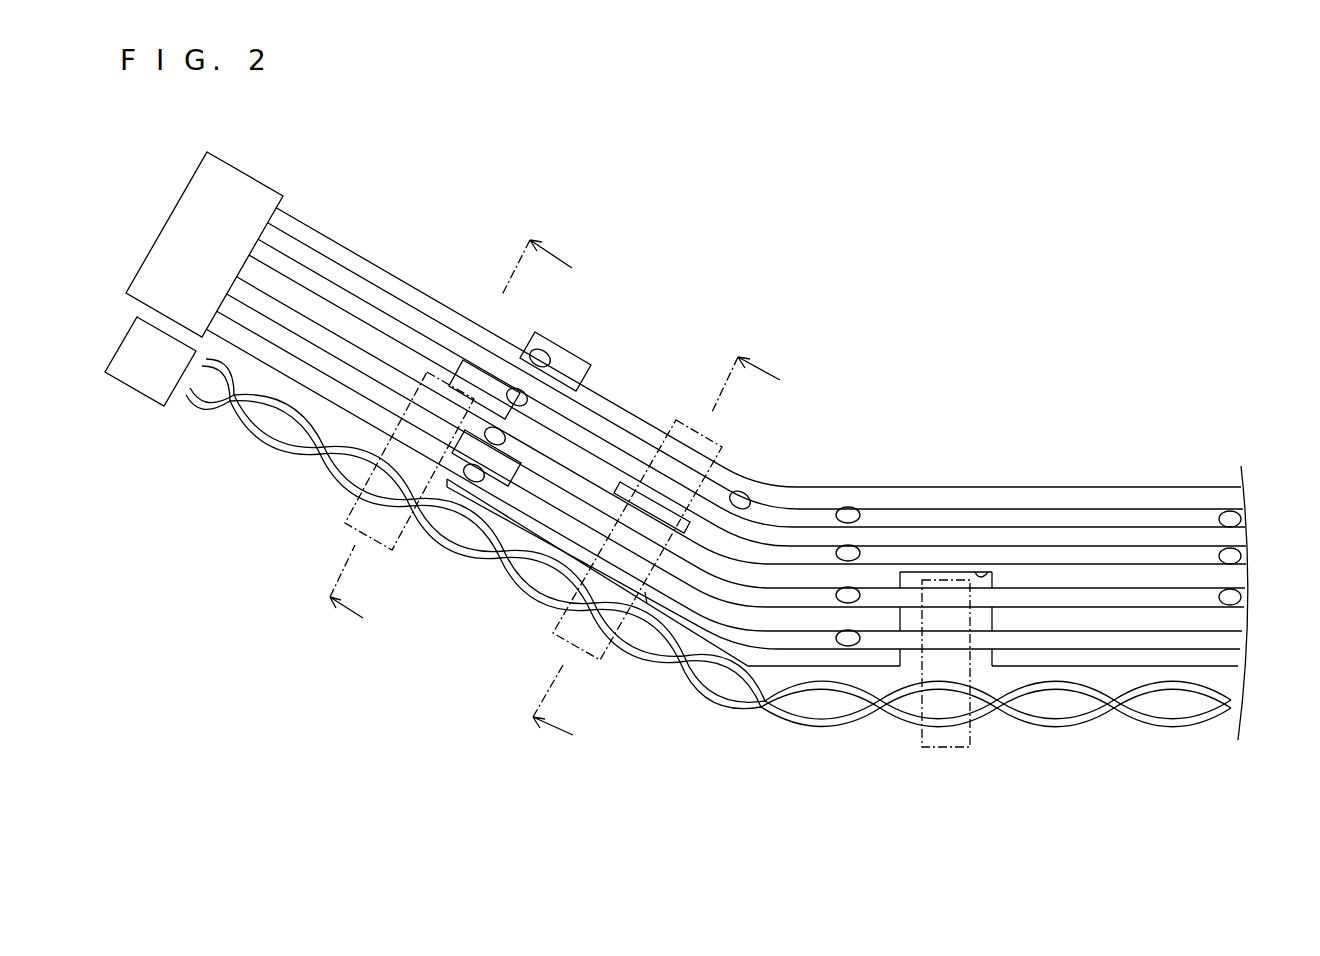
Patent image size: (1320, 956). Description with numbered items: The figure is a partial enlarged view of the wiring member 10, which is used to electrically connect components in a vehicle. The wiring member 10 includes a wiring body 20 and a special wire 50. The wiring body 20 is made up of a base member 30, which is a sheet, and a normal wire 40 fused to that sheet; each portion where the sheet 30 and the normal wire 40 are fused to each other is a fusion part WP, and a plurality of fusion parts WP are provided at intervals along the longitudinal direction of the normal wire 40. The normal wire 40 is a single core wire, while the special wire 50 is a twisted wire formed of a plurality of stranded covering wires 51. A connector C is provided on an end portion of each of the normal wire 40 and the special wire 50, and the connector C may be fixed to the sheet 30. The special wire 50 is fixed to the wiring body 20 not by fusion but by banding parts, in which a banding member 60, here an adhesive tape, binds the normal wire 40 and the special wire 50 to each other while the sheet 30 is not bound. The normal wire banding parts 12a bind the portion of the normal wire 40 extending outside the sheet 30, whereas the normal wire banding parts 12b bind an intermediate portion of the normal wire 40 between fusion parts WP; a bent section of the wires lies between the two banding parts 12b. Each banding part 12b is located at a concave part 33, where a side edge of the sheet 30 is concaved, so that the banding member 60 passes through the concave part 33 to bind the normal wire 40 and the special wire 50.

The wiring member 10 is at (1230, 341).
The normal wire banding part 12a is at (405, 556).
The normal wire banding part 12b is at (617, 677).
The wiring body 20 is at (1120, 428).
The base member 30 is at (1046, 486).
The normal wire 40 is at (1103, 470).
The concave part 33 is at (628, 490).
The special wire 50 is at (1174, 800).
The covering wire 51 is at (1157, 725).
The banding member 60 is at (345, 523).
The connector C is at (246, 173).
The fusion part WP is at (560, 398).